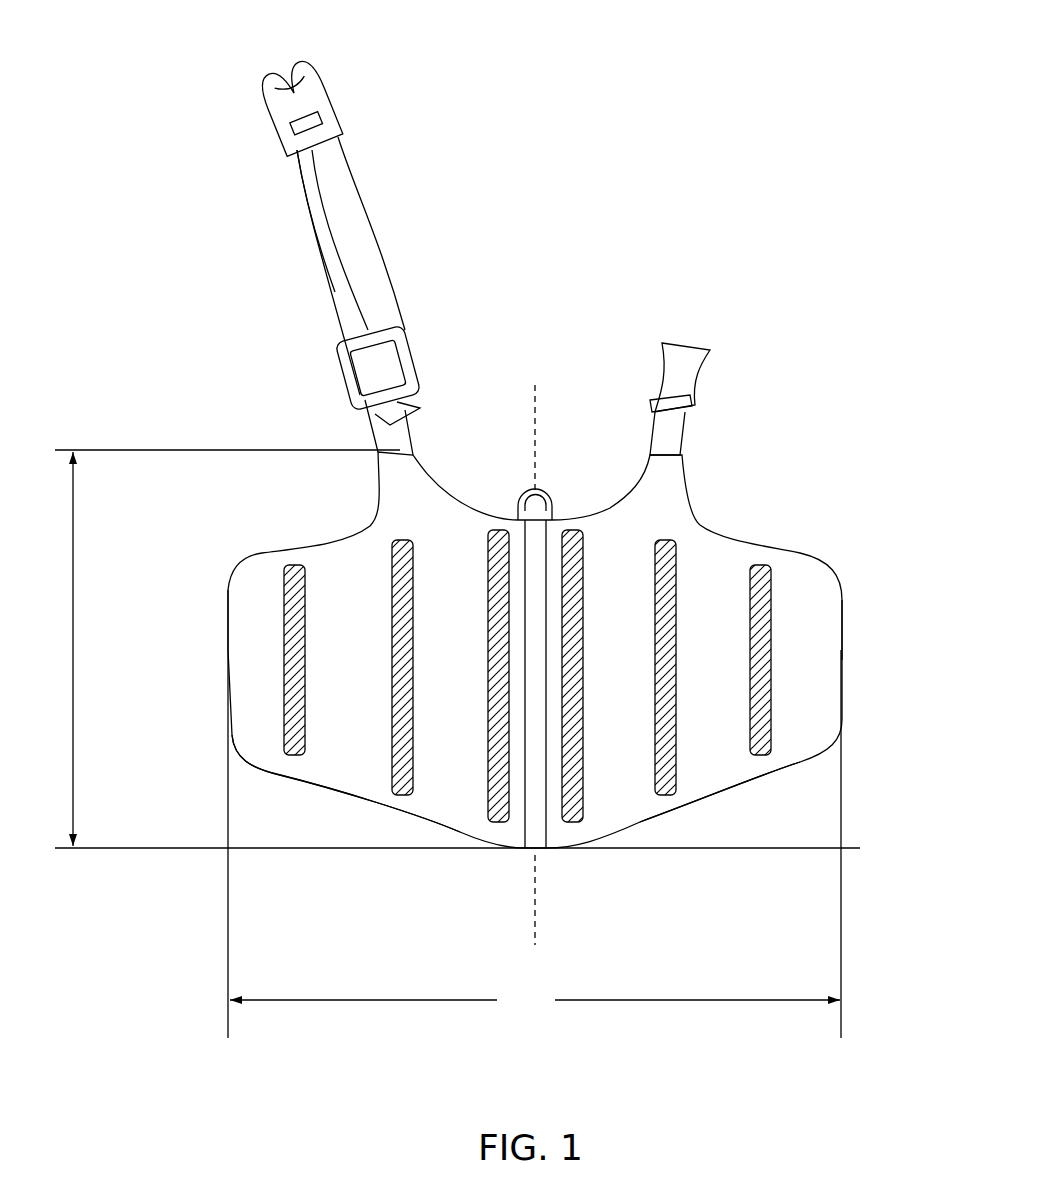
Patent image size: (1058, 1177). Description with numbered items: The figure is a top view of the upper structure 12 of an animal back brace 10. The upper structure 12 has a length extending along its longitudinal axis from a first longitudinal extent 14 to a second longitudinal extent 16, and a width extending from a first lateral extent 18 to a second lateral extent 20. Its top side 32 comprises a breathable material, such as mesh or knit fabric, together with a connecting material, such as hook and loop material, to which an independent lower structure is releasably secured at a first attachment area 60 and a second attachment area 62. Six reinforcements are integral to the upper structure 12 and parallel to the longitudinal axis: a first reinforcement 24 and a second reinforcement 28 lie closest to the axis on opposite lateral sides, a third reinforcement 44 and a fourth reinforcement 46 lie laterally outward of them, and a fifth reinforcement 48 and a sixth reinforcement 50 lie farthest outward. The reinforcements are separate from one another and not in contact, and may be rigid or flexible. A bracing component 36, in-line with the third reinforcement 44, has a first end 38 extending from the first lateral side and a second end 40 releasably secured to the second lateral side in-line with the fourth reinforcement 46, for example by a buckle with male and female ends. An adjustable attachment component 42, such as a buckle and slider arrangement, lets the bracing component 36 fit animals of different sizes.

The brace 10 is at (880, 384).
The upper structure 12 is at (268, 488).
The first longitudinal extent 14 is at (420, 447).
The second longitudinal extent 16 is at (528, 858).
The first lateral extent 18 is at (228, 578).
The second lateral extent 20 is at (835, 566).
The first reinforcement 24 is at (488, 700).
The second reinforcement 28 is at (583, 650).
The top side 32 is at (320, 862).
The bracing component 36 is at (408, 284).
The first end 38 is at (410, 462).
The second end 40 is at (332, 58).
The adjustable attachment component 42 is at (318, 291).
The third reinforcement 44 is at (393, 700).
The fourth reinforcement 46 is at (676, 698).
The fifth reinforcement 48 is at (284, 700).
The sixth reinforcement 50 is at (771, 712).
The first attachment area 60 is at (222, 788).
The second attachment area 62 is at (718, 830).